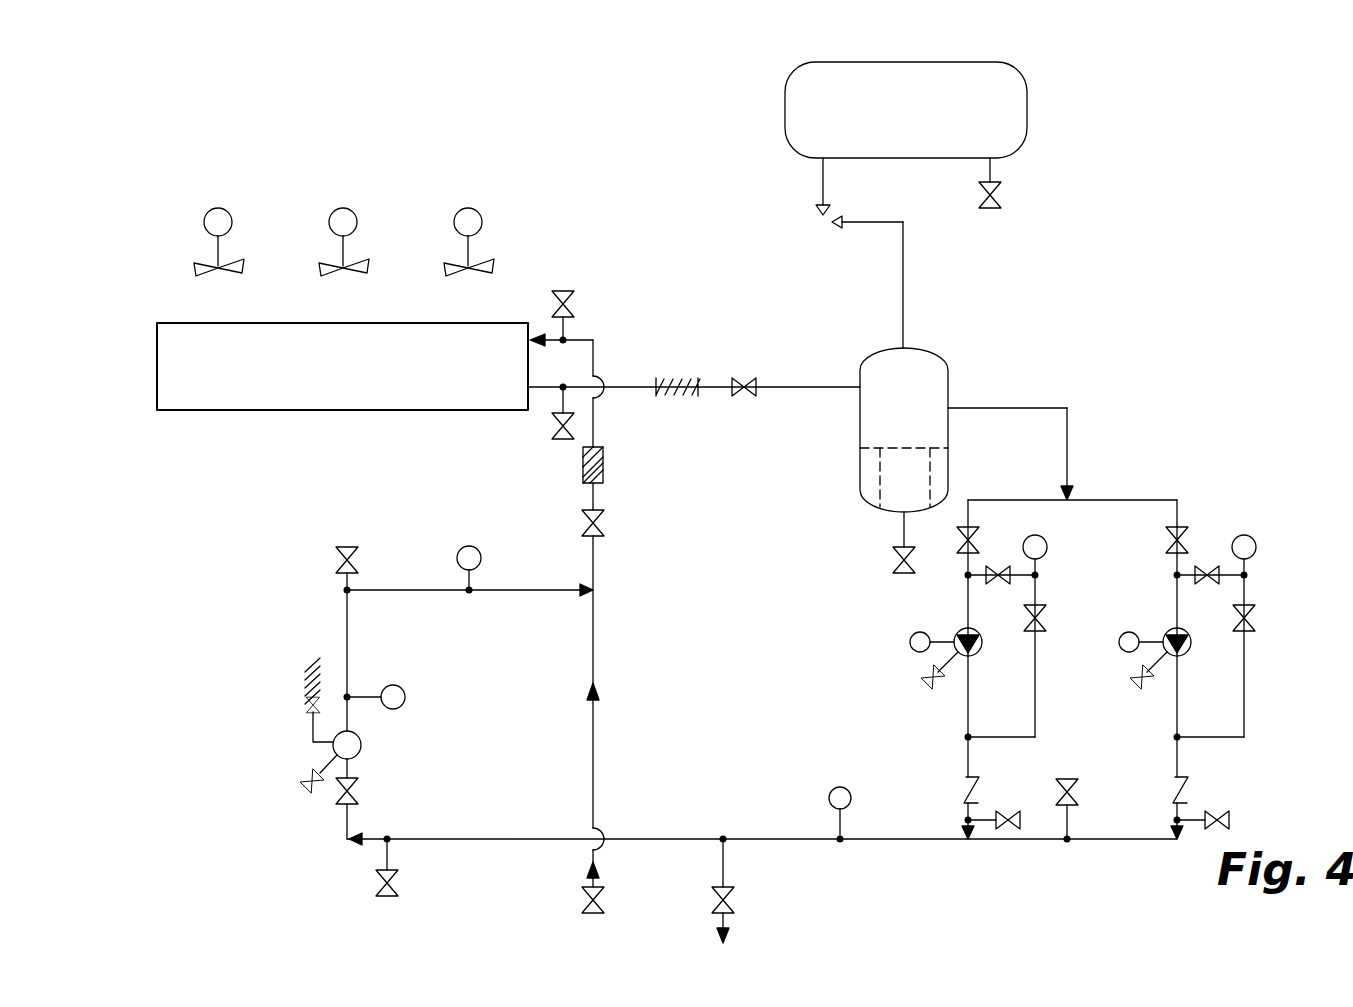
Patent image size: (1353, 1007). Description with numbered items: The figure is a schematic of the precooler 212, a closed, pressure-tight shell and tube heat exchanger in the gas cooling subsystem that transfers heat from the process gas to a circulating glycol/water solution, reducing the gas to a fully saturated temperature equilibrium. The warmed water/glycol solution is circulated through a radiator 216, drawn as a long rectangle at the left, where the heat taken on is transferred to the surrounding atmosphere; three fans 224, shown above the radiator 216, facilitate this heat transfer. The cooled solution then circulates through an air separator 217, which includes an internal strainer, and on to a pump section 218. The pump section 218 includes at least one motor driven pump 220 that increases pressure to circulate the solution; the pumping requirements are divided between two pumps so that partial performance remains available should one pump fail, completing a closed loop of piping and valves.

The precooler 212 is at (1145, 220).
The radiator 216 is at (328, 370).
The air separator 217 is at (930, 367).
The pump section 218 is at (1036, 623).
The motor driven pump 220 is at (910, 652).
The fans 224 is at (229, 210).